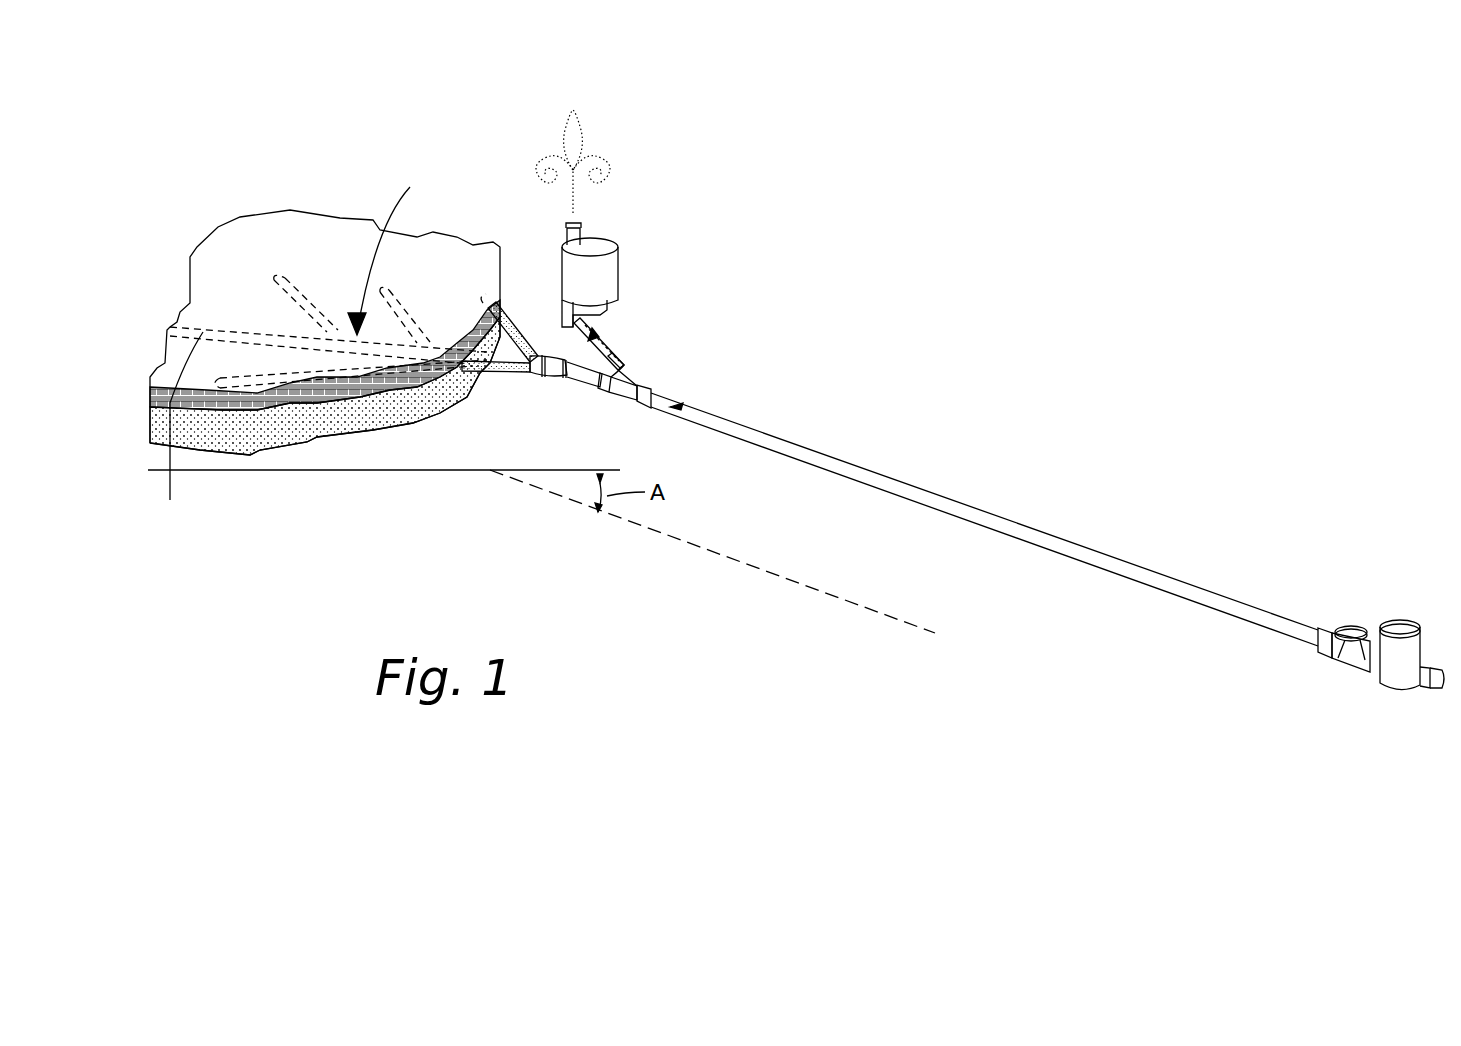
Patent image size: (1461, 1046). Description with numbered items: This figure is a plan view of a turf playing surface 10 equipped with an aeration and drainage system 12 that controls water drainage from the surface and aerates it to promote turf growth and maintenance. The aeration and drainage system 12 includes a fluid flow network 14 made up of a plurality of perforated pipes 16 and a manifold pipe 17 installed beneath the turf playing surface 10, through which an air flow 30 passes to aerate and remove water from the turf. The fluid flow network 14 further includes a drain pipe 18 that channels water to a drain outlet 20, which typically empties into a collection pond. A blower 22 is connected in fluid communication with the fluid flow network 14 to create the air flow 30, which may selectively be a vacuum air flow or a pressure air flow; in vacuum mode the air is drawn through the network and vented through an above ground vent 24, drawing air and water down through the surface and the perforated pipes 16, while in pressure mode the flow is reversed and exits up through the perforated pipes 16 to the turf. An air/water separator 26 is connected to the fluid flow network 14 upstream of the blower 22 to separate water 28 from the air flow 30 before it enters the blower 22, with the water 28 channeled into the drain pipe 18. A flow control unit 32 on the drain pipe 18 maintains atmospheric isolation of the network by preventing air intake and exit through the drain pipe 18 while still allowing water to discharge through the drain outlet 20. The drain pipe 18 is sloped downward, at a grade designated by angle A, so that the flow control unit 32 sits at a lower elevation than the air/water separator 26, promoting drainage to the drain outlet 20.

The turf playing surface 10 is at (290, 210).
The aeration and drainage system 12 is at (850, 421).
The fluid flow network 14 is at (328, 278).
The perforated pipes 16 is at (493, 370).
The manifold pipe 17 is at (180, 431).
The drain pipe 18 is at (952, 505).
The drain outlet 20 is at (1440, 683).
The blower 22 is at (618, 270).
The above ground vent 24 is at (580, 232).
The air/water separator 26 is at (627, 378).
The water 28 is at (650, 410).
The air flow 30 is at (613, 337).
The flow control unit 32 is at (1373, 627).